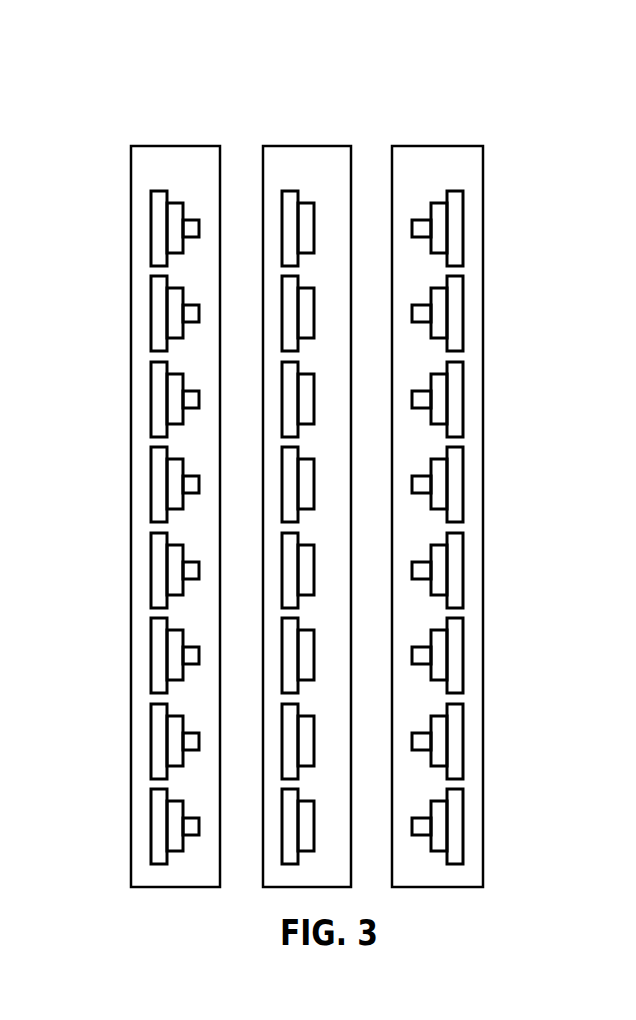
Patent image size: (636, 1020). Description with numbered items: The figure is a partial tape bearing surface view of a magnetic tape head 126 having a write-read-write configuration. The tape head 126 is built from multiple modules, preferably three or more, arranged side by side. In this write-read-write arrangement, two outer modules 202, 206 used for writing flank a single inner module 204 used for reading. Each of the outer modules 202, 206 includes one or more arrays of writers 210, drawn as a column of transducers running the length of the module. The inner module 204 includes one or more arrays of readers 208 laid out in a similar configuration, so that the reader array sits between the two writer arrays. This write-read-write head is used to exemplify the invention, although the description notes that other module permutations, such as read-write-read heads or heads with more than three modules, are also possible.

The tape head 126 is at (86, 108).
The outer module 202 is at (161, 118).
The inner module 204 is at (301, 116).
The outer module 206 is at (421, 116).
The reader 208 is at (315, 397).
The writer 210 is at (463, 482).